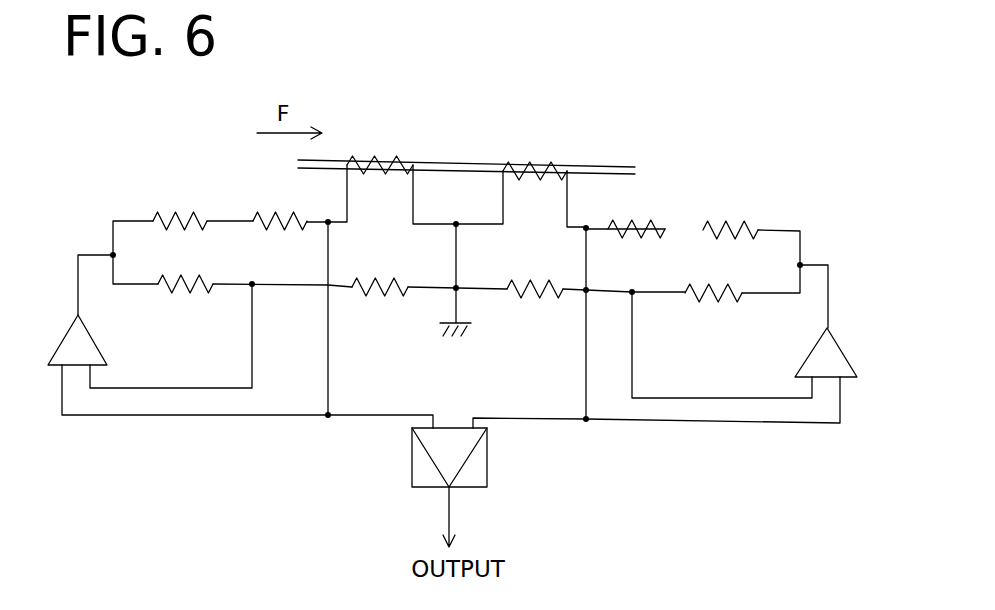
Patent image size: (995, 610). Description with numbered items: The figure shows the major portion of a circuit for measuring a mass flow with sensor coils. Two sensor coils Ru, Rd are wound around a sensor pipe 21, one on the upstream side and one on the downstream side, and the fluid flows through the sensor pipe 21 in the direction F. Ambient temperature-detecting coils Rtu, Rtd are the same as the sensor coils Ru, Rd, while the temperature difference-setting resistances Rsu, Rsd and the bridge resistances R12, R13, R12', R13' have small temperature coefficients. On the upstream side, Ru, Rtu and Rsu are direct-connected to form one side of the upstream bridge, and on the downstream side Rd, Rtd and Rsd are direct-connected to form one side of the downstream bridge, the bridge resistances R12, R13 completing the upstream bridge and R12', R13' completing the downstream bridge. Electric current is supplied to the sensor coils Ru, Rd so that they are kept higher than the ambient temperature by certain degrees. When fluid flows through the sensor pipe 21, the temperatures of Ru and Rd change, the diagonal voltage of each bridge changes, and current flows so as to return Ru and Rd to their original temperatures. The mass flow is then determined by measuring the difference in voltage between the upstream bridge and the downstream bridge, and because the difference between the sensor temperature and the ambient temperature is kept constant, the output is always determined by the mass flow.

The sensor pipe 21 is at (627, 167).
The upstream sensor coil Ru is at (380, 153).
The downstream sensor coil Rd is at (535, 157).
The upstream temperature difference-setting resistance Rsu is at (180, 208).
The upstream ambient temperature-detecting coil Rtu is at (280, 208).
The bridge resistance R12 is at (186, 300).
The bridge resistance R13 is at (380, 303).
The bridge resistance R13' is at (536, 305).
The downstream ambient temperature-detecting coil Rtd is at (636, 215).
The downstream temperature difference-setting resistance Rsd is at (730, 216).
The bridge resistance R12' is at (716, 310).